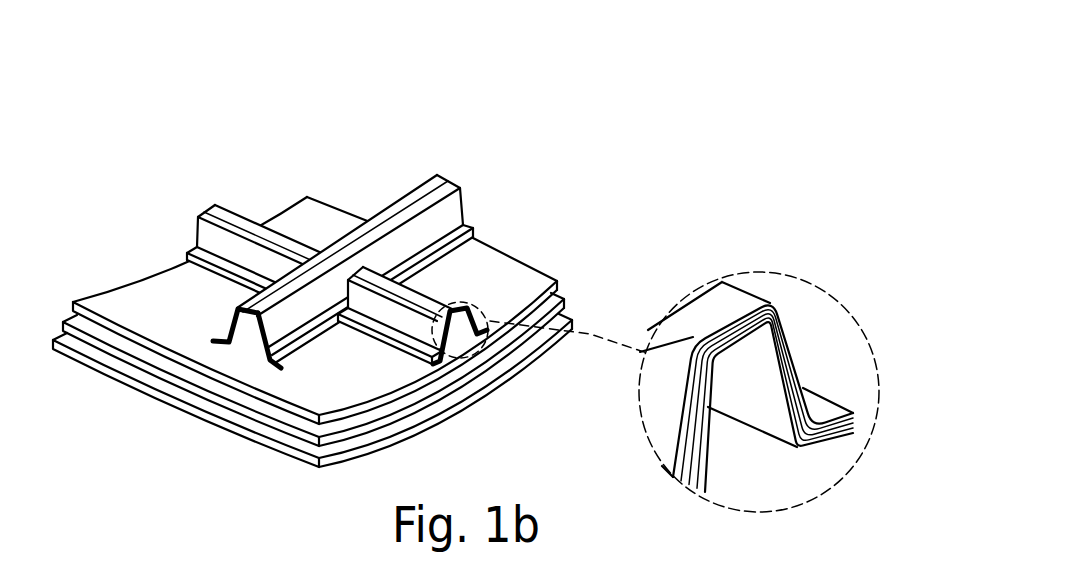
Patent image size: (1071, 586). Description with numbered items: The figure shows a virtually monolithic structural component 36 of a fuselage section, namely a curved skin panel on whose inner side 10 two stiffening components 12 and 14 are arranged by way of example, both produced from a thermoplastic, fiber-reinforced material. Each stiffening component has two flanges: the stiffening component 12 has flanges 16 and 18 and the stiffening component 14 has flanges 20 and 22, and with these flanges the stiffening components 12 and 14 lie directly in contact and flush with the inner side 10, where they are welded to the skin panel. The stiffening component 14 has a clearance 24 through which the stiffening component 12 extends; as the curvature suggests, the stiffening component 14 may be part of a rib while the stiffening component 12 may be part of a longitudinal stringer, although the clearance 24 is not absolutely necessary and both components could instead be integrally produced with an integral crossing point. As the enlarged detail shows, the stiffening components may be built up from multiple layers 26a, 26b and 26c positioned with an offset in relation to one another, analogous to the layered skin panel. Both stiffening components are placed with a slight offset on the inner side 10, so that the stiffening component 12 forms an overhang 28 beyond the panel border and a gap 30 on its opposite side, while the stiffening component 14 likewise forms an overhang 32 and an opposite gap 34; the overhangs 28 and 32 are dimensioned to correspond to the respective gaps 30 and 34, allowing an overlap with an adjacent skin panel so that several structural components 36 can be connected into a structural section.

The inner side 10 is at (318, 213).
The stiffening component 12 is at (217, 247).
The stiffening component 14 is at (448, 219).
The flange 16 is at (200, 255).
The flange 18 is at (493, 298).
The flange 20 is at (214, 344).
The flange 22 is at (276, 366).
The clearance 24 is at (366, 252).
The layer 26a is at (738, 312).
The layer 26b is at (757, 315).
The layer 26c is at (779, 346).
The overhang 28 is at (174, 262).
The gap 30 is at (434, 366).
The overhang 32 is at (491, 232).
The gap 34 is at (189, 337).
The structural component 36 is at (470, 80).